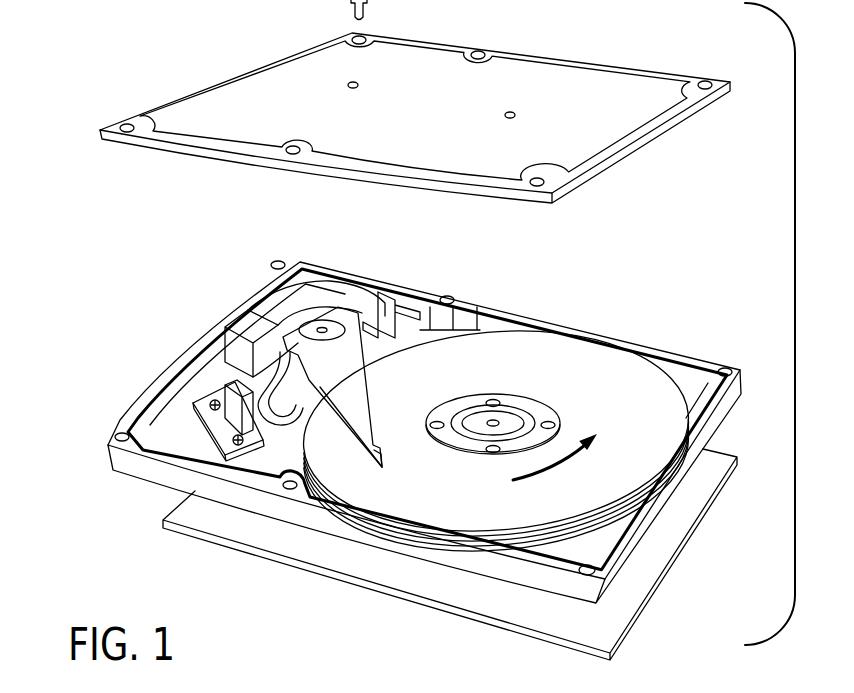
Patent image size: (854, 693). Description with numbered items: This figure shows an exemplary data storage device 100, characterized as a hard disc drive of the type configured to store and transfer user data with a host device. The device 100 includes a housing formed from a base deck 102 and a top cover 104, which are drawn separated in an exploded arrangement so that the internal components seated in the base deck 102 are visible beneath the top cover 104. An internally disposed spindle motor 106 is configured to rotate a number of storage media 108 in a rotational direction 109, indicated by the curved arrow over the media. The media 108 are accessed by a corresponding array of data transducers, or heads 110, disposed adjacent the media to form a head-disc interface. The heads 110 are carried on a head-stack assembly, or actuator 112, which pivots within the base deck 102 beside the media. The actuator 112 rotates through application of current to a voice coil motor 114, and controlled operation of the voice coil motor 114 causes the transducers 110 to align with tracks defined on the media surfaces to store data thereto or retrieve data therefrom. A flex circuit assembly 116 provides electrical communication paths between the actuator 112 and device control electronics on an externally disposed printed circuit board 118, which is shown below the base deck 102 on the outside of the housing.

The device 100 is at (150, 38).
The base deck 102 is at (657, 508).
The top cover 104 is at (507, 72).
The spindle motor 106 is at (510, 412).
The storage media 108 is at (517, 533).
The rotational direction 109 is at (558, 478).
The data transducers (heads) 110 is at (383, 466).
The head-stack assembly (actuator) 112 is at (355, 395).
The voice coil motor 114 is at (305, 297).
The flex circuit assembly 116 is at (217, 390).
The printed circuit board 118 is at (250, 530).